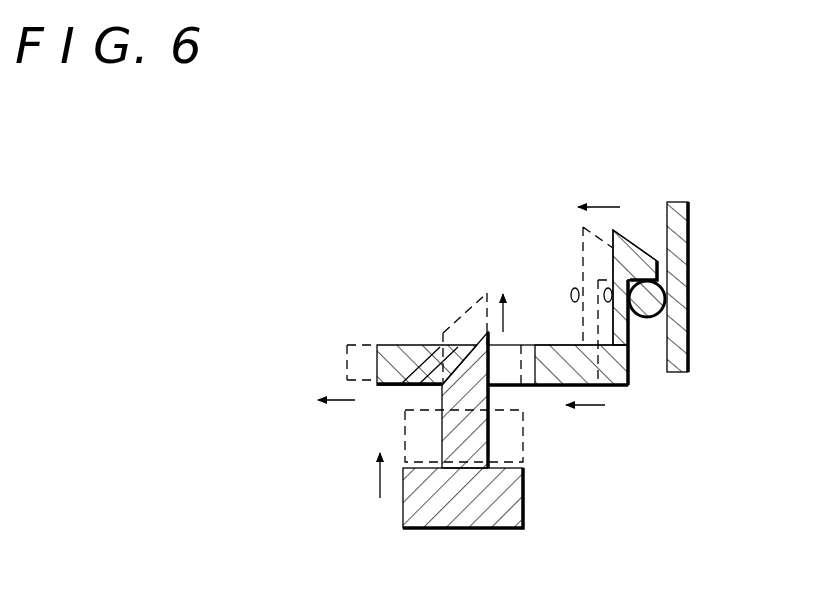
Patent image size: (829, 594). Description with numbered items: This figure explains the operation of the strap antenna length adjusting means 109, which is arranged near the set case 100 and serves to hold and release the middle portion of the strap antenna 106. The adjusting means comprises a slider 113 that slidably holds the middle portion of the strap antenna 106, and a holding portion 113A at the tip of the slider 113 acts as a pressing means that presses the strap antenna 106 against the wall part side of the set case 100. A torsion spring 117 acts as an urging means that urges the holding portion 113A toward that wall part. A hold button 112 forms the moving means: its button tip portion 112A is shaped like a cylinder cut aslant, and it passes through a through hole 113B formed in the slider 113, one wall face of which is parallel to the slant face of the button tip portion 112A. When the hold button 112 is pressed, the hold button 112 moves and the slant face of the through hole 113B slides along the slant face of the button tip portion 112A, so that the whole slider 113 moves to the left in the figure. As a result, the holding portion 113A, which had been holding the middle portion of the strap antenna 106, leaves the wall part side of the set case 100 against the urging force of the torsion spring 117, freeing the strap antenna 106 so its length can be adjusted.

The set case 100 is at (680, 286).
The strap antenna 106 is at (657, 327).
The strap antenna length adjusting means 109 is at (362, 232).
The hold button 112 is at (458, 518).
The button tip portion 112A is at (467, 370).
The slider 113 is at (392, 352).
The holding portion 113A is at (643, 245).
The through hole 113B is at (527, 388).
The torsion spring 117 is at (586, 290).